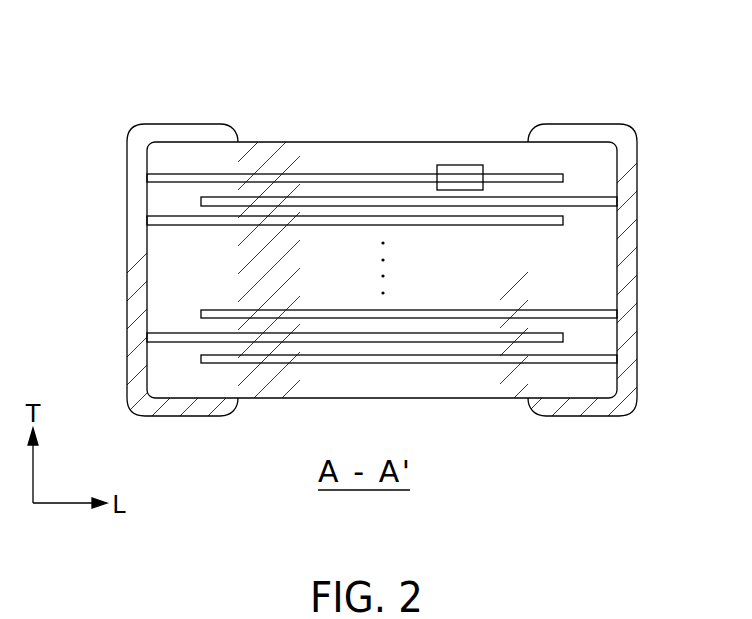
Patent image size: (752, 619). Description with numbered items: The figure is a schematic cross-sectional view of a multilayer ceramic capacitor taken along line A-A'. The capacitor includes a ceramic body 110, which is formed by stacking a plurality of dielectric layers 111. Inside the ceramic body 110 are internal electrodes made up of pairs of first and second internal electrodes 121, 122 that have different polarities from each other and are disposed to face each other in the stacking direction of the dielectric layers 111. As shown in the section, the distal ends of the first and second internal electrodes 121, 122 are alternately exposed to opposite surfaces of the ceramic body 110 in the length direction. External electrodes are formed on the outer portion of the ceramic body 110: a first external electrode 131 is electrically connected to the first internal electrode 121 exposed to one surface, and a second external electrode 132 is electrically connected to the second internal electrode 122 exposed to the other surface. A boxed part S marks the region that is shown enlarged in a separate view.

The ceramic body 110 is at (385, 142).
The dielectric layer 111 is at (557, 190).
The first internal electrode 121 is at (563, 178).
The second internal electrode 122 is at (584, 203).
The first external electrode 131 is at (184, 124).
The second external electrode 132 is at (583, 124).
The part S is at (460, 165).